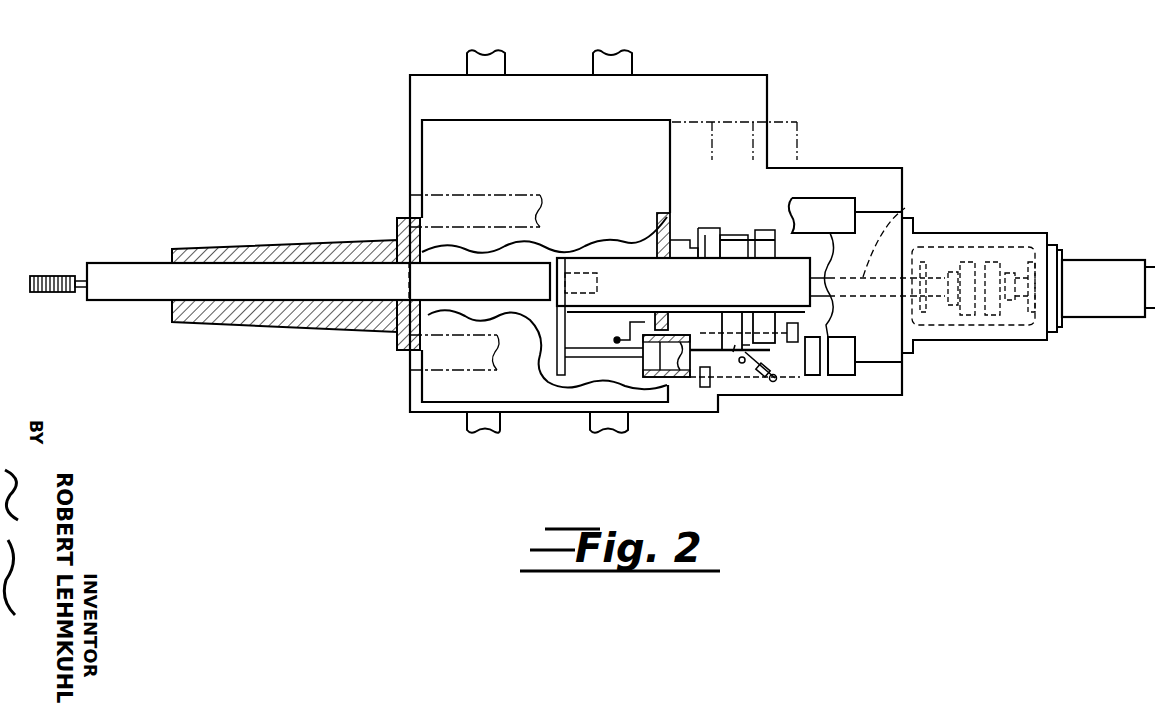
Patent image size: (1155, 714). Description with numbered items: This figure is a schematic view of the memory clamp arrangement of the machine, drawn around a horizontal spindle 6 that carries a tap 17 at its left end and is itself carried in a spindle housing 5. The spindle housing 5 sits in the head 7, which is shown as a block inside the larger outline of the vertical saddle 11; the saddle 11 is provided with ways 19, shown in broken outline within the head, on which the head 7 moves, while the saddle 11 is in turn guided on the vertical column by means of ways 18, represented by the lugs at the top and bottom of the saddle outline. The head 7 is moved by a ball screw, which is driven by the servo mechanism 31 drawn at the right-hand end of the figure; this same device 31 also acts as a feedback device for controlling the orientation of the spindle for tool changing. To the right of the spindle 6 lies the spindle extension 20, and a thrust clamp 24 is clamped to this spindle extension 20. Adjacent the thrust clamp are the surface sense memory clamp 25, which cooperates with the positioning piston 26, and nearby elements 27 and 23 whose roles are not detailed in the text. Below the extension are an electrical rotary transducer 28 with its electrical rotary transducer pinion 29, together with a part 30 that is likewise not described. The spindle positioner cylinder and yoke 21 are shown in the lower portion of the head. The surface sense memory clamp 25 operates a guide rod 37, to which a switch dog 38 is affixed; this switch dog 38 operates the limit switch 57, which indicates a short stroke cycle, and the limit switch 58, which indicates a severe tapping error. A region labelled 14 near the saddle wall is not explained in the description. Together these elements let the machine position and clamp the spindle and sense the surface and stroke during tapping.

The spindle housing 5 is at (236, 246).
The spindle 6 is at (117, 262).
The head 7 is at (538, 117).
The vertical saddle 11 is at (704, 74).
The motor region 14 is at (905, 208).
The tap 17 is at (43, 275).
The ways 18 is at (490, 60).
The ways 19 is at (453, 196).
The spindle extension 20 is at (608, 262).
The spindle positioner cylinder and yoke 21 is at (535, 378).
The pivot pin 23 is at (615, 337).
The thrust clamp 24 is at (683, 240).
The surface sense memory clamp 25 is at (736, 238).
The positioning piston 26 is at (763, 238).
The bracket 27 is at (713, 240).
The electrical rotary transducer 28 is at (752, 366).
The electrical rotary transducer pinion 29 is at (746, 363).
The pin 30 is at (742, 366).
The servo mechanism 31 is at (1105, 258).
The guide rod 37 is at (776, 378).
The switch dog 38 is at (782, 386).
The limit switch 57 is at (805, 335).
The limit switch 58 is at (705, 390).